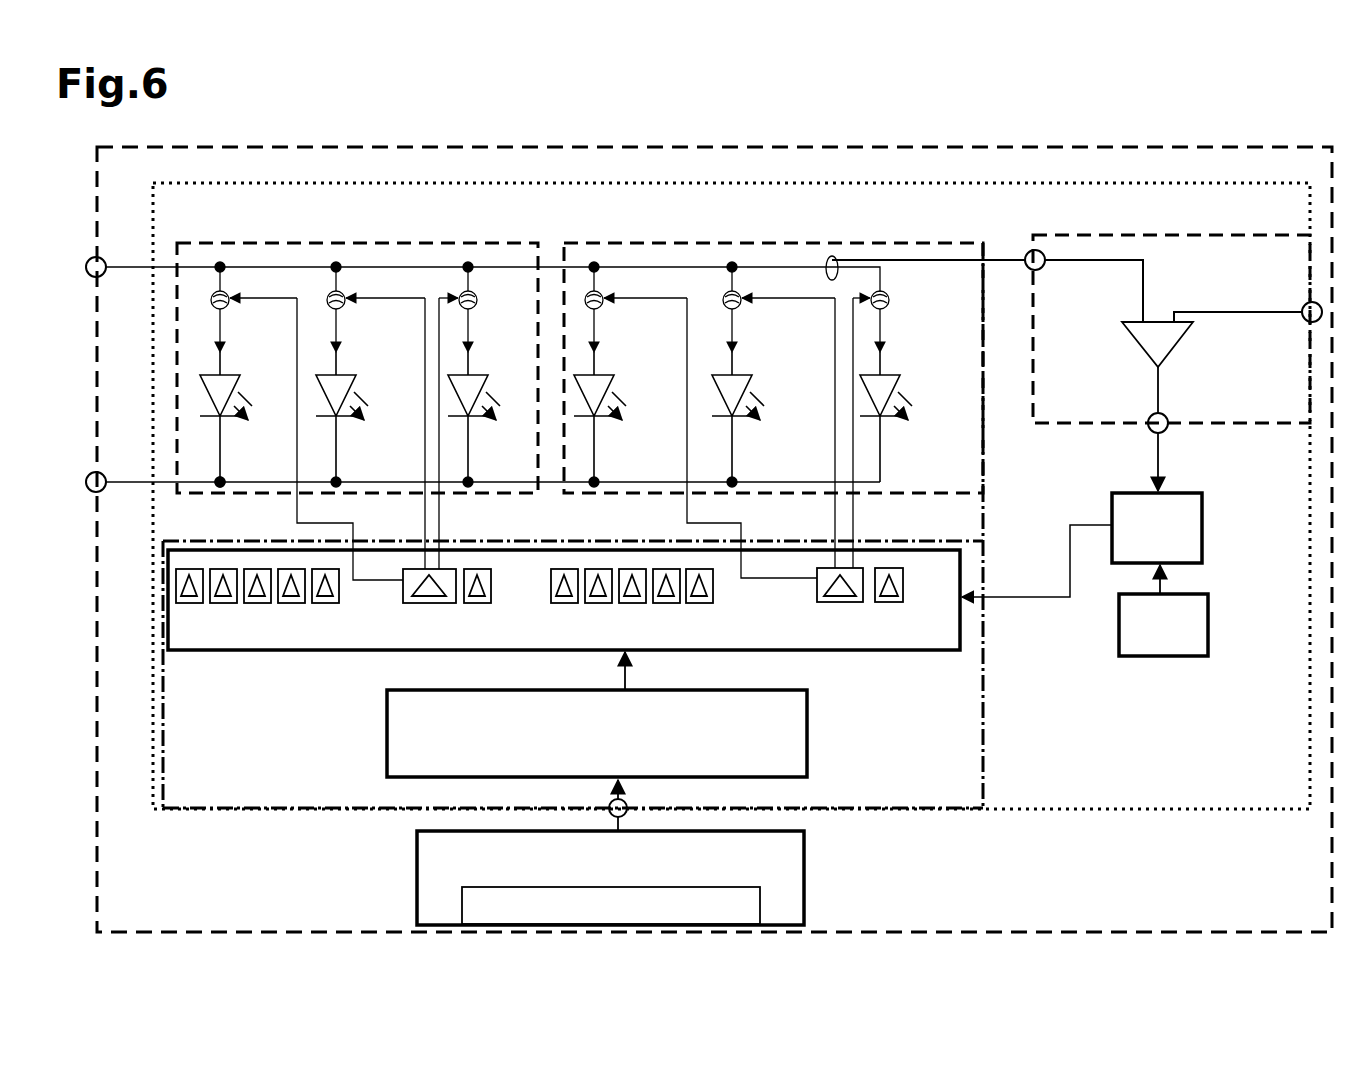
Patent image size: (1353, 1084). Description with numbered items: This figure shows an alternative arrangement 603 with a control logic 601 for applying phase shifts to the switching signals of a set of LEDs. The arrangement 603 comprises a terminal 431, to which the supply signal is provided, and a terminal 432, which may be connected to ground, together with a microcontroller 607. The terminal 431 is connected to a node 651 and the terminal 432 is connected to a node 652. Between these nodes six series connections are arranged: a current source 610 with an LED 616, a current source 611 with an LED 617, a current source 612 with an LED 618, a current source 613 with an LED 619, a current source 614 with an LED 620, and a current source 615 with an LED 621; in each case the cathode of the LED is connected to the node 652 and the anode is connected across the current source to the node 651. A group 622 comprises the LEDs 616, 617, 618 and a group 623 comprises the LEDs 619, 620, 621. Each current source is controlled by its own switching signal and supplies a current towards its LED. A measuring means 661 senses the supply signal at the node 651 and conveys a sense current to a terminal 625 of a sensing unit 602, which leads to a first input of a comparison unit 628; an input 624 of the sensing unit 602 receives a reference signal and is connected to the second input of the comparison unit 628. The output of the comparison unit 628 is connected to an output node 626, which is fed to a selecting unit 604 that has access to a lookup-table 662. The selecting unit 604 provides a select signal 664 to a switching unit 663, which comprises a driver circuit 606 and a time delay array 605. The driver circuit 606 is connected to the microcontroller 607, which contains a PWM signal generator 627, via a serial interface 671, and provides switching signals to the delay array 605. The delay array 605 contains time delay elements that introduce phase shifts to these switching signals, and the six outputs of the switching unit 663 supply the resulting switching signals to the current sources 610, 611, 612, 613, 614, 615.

The terminal 431 is at (555, 263).
The terminal 432 is at (483, 471).
The control logic 601 is at (1272, 812).
The sensing unit 602 is at (1098, 425).
The arrangement 603 is at (878, 146).
The selecting unit 604 is at (1203, 526).
The time delay array 605 is at (278, 652).
The driver circuit 606 is at (808, 745).
The microcontroller 607 is at (806, 886).
The current source 610 is at (307, 421).
The current source 611 is at (378, 418).
The current source 612 is at (482, 415).
The current source 613 is at (701, 420).
The current source 614 is at (779, 415).
The current source 615 is at (896, 428).
The LED 616 is at (234, 419).
The LED 617 is at (351, 419).
The LED 618 is at (484, 419).
The LED 619 is at (609, 419).
The LED 620 is at (746, 419).
The LED 621 is at (895, 417).
The group 622 is at (236, 245).
The group 623 is at (680, 243).
The input 624 is at (1248, 333).
The terminal 625 is at (1062, 286).
The output node 626 is at (1182, 429).
The PWM signal generator 627 is at (705, 886).
The comparison unit 628 is at (1138, 342).
The node 651 is at (338, 260).
The node 652 is at (220, 490).
The measuring means 661 is at (833, 256).
The lookup-table (LUT) 662 is at (1209, 626).
The switching unit 663 is at (983, 740).
The select signal 664 is at (1037, 578).
The serial interface 671 is at (642, 805).